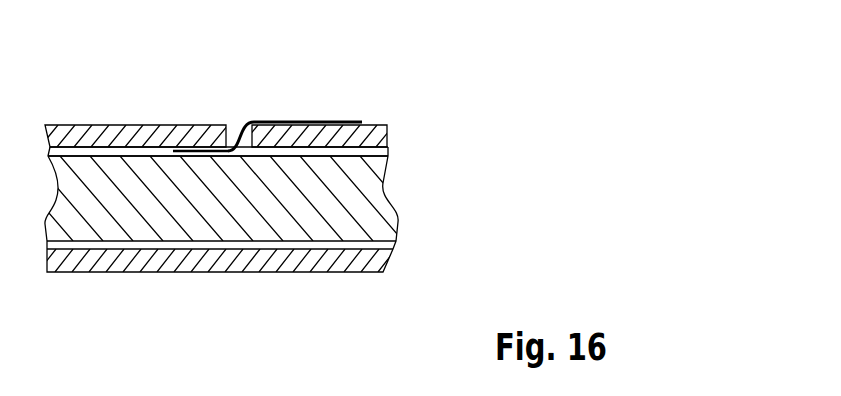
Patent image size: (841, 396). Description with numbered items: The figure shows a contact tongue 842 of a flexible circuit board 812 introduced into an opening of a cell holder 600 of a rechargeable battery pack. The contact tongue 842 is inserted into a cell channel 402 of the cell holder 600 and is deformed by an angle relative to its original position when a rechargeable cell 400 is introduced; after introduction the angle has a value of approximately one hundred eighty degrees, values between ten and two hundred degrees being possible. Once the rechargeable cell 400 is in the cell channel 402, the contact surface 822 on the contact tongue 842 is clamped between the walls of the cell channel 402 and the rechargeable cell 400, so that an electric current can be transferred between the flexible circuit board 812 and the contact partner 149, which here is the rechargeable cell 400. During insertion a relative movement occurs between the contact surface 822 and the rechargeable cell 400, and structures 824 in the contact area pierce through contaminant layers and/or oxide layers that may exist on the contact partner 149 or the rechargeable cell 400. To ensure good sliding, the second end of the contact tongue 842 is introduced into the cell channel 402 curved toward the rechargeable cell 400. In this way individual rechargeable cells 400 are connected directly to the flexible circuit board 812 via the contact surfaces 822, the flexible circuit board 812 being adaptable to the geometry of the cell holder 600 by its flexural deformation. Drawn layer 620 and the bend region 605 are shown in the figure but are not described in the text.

The cell holder 600 is at (82, 109).
The contact surface 822 is at (218, 119).
The structures in the contact area 824 is at (170, 165).
The contact tongue 842 is at (206, 148).
The bent portion of conductor 605 is at (232, 131).
The flexible circuit board 812 is at (305, 119).
The cell channel 402 is at (372, 152).
The rechargeable cell 400 is at (231, 241).
The contact partner 149 is at (264, 210).
The bottom layer 620 is at (142, 255).